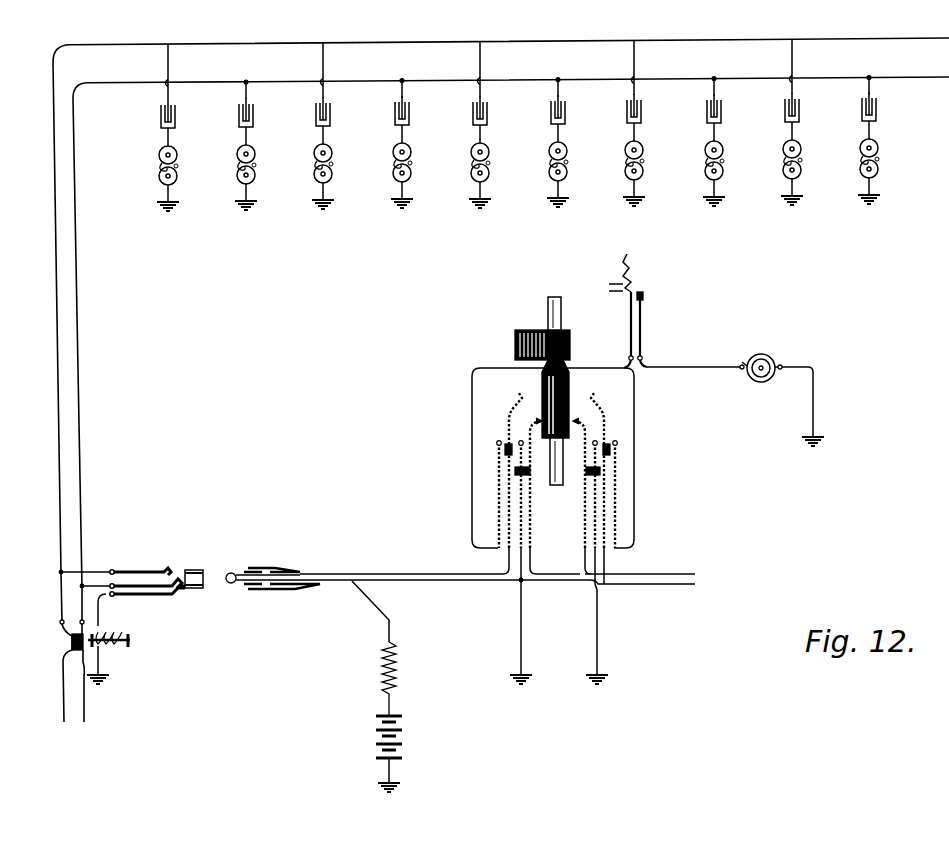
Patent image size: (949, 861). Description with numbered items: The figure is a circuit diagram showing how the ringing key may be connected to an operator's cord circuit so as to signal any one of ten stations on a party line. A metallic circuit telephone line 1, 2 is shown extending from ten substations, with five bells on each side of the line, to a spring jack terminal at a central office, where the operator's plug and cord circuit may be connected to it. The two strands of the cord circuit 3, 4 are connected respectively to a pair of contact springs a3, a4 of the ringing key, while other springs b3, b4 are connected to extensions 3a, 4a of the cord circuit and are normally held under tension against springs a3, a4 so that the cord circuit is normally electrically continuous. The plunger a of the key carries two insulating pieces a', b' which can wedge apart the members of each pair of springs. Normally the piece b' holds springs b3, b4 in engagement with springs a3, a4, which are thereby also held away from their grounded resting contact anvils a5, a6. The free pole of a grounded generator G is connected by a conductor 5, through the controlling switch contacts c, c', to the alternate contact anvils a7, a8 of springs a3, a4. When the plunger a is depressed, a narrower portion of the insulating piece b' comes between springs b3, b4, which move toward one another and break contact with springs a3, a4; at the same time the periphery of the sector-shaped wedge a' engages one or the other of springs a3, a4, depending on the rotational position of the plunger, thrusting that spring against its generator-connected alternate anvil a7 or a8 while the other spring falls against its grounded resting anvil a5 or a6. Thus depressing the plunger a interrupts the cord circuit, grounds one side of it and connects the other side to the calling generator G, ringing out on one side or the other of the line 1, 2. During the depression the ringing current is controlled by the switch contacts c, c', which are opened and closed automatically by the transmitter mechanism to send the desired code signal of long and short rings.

The telephone line strand 1 is at (496, 380).
The telephone line strand 2 is at (511, 399).
The cord circuit strand 3 is at (367, 565).
The cord circuit strand 4 is at (413, 589).
The cord circuit extension 3a is at (650, 568).
The cord circuit extension 4a is at (652, 588).
The conductor 5 is at (695, 357).
The generator G is at (783, 390).
The plunger a is at (542, 391).
The insulating sector-shaped wedge a' is at (532, 345).
The contact spring a3 is at (501, 470).
The contact spring a4 is at (608, 488).
The resting contact anvil a5 is at (519, 498).
The resting contact anvil a6 is at (597, 506).
The alternate contact anvil a7 is at (498, 468).
The alternate contact anvil a8 is at (609, 466).
The insulating piece b' is at (566, 399).
The contact spring b3 is at (508, 436).
The contact spring b4 is at (588, 432).
The switch contact spring c is at (621, 311).
The switch contact anvil c' is at (649, 329).